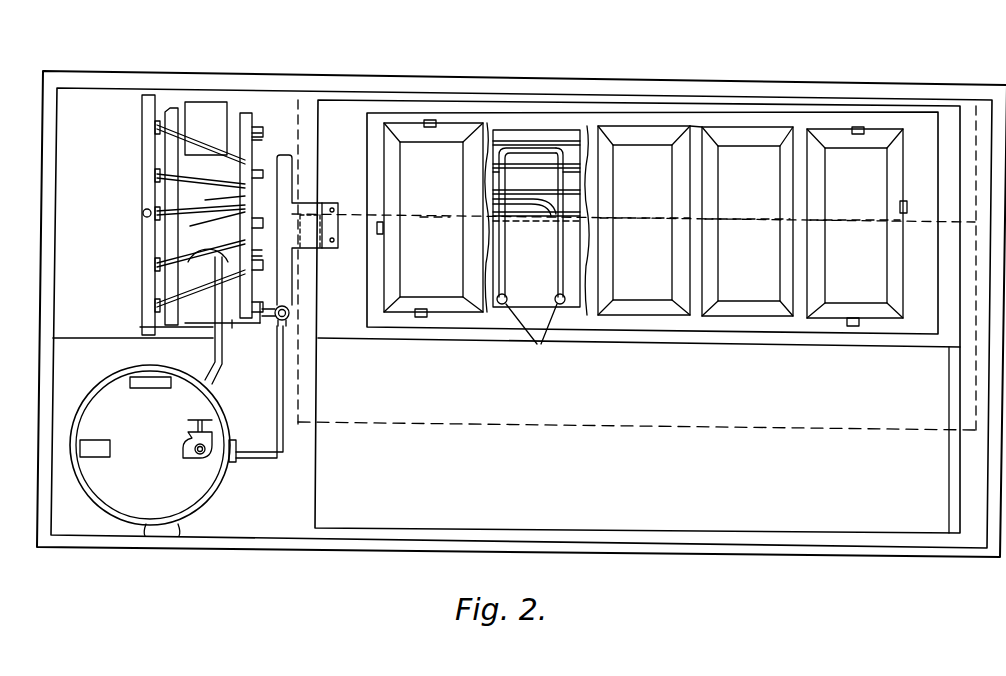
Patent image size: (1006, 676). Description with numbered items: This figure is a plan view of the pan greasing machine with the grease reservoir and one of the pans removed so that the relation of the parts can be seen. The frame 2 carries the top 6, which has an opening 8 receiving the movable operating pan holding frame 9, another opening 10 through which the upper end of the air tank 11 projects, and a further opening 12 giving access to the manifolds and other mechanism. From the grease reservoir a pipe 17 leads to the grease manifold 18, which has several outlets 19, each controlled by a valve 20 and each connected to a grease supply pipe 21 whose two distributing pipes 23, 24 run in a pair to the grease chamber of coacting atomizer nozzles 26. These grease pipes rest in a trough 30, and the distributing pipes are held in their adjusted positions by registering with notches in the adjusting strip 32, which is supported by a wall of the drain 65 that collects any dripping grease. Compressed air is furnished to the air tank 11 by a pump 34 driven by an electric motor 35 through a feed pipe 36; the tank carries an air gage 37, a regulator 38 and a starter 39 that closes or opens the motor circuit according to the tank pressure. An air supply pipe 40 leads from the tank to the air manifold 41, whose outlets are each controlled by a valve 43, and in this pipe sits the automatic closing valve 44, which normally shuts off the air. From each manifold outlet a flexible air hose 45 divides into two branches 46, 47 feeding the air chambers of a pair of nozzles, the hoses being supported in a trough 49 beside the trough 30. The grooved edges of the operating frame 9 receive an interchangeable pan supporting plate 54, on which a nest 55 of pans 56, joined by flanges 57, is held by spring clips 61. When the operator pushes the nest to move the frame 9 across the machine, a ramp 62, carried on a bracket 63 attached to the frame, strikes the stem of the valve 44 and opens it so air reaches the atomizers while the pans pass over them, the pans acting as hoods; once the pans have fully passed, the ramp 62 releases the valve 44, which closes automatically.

The frame 2 is at (992, 557).
The top 6 is at (94, 538).
The opening 8 is at (362, 520).
The operating pan holding frame 9 is at (940, 112).
The opening 10 is at (179, 536).
The air tank 11 is at (147, 536).
The opening 12 is at (262, 112).
The pipe 17 is at (143, 214).
The grease manifold 18 is at (155, 176).
The outlets 19 is at (152, 266).
The valve 20 is at (155, 127).
The grease supply pipe 21 is at (235, 205).
The distributing pipe 23 is at (507, 261).
The distributing pipe 24 is at (566, 278).
The atomizer nozzles 26 is at (531, 335).
The trough 30 is at (572, 205).
The adjusting strip 32 is at (572, 223).
The pump 34 is at (231, 322).
The electric motor 35 is at (207, 100).
The feed pipe 36 is at (213, 357).
The air gage 37 is at (98, 440).
The regulator 38 is at (188, 440).
The starter 39 is at (138, 377).
The air supply pipe 40 is at (285, 401).
The air manifold 41 is at (246, 112).
The valve 43 is at (258, 140).
The automatic closing valve 44 is at (290, 320).
The air hose 45 is at (258, 264).
The branch 46 is at (493, 172).
The branch 47 is at (565, 173).
The trough 49 is at (537, 140).
The pan supporting plate 54 is at (752, 327).
The nest of pans 55 is at (837, 310).
The pans 56 is at (700, 300).
The flanges 57 is at (803, 130).
The spring clips 61 is at (435, 120).
The ramp 62 is at (293, 170).
The bracket 63 is at (300, 205).
The drain 65 is at (662, 432).